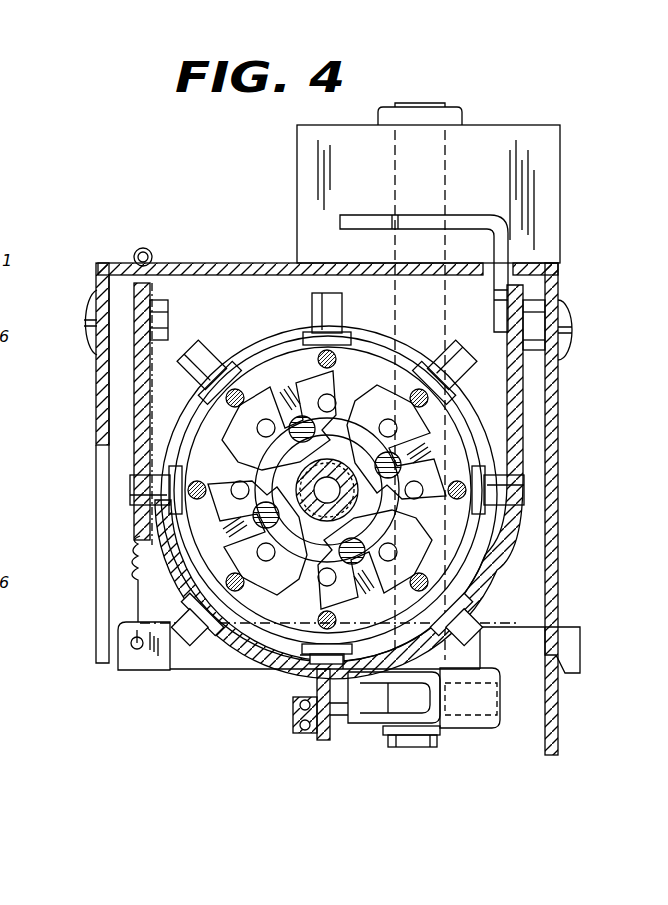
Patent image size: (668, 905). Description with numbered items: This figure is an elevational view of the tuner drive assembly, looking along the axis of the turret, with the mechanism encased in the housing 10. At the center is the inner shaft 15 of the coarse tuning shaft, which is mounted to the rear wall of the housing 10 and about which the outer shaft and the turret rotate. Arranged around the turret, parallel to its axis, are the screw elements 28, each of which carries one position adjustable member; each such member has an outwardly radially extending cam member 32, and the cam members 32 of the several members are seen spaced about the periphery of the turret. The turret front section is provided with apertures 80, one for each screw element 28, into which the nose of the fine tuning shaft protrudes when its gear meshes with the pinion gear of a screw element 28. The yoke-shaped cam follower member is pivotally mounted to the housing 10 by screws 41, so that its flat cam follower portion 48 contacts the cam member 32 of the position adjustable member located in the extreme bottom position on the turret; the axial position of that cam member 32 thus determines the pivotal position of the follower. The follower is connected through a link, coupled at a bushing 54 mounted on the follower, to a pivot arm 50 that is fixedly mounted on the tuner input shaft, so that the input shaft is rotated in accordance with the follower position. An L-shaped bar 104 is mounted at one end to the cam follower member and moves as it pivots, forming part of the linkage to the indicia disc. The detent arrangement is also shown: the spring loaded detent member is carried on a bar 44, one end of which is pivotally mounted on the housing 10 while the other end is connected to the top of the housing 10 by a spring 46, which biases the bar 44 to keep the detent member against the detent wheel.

The housing 10 is at (95, 561).
The inner shaft 15 is at (329, 494).
The screw element 28 is at (336, 363).
The cam member 32 is at (340, 316).
The screws 41 is at (82, 302).
The bar 44 is at (160, 672).
The spring 46 is at (168, 312).
The cam follower portion 48 is at (516, 548).
The pivot arm 50 is at (300, 662).
The bushing 54 is at (300, 720).
The aperture 80 is at (332, 400).
The L-shaped bar 104 is at (385, 222).